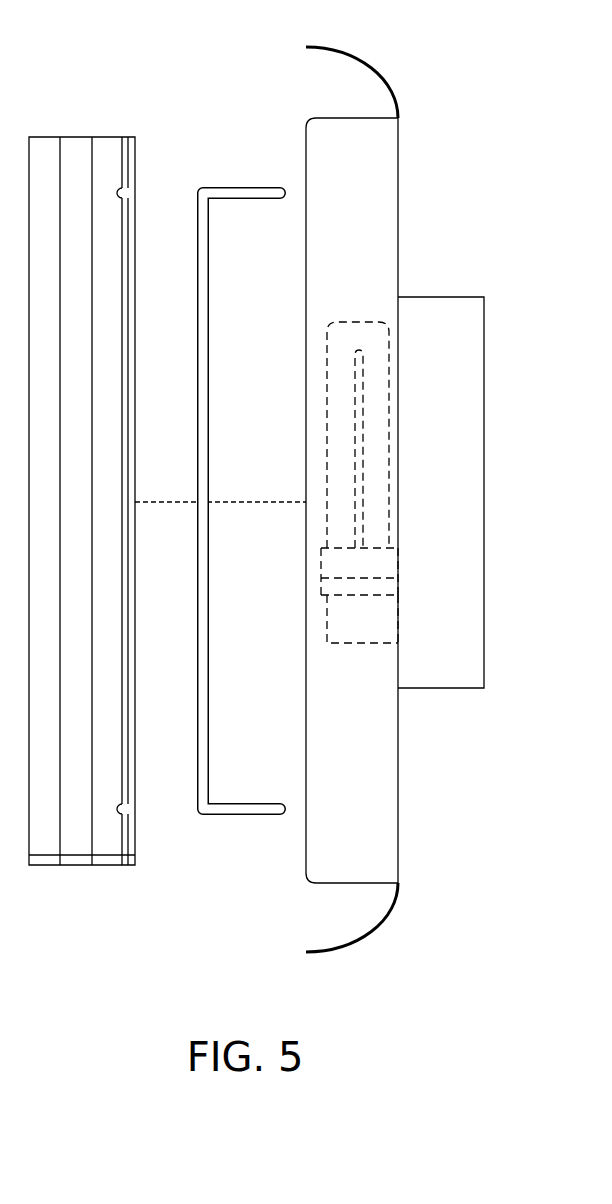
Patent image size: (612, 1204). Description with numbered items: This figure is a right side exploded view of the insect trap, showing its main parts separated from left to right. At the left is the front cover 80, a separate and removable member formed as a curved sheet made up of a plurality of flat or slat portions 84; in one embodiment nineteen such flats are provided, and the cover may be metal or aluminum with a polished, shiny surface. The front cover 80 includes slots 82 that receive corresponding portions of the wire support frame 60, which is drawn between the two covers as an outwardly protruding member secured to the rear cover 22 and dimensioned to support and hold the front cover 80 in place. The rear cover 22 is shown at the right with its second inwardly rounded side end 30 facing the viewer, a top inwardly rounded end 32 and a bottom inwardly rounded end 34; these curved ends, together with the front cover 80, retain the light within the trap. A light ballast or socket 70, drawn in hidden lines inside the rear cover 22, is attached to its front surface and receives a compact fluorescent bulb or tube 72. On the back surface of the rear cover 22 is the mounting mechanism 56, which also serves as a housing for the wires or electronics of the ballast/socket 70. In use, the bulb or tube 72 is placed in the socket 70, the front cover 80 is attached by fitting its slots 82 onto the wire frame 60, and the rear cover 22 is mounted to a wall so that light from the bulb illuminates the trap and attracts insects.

The rear cover 22 is at (443, 290).
The second inwardly rounded or curved side end 30 is at (312, 157).
The top inwardly rounded or curved end 32 is at (378, 71).
The bottom inwardly rounded or curved end 34 is at (371, 945).
The mounting mechanism 56 is at (462, 512).
The wire support frame 60 is at (232, 820).
The light ballast or socket 70 is at (333, 527).
The compact fluorescent bulb or tube 72 is at (343, 625).
The front cover 80 is at (77, 132).
The slot 82 is at (136, 193).
The flat or slat portion 84 is at (83, 858).